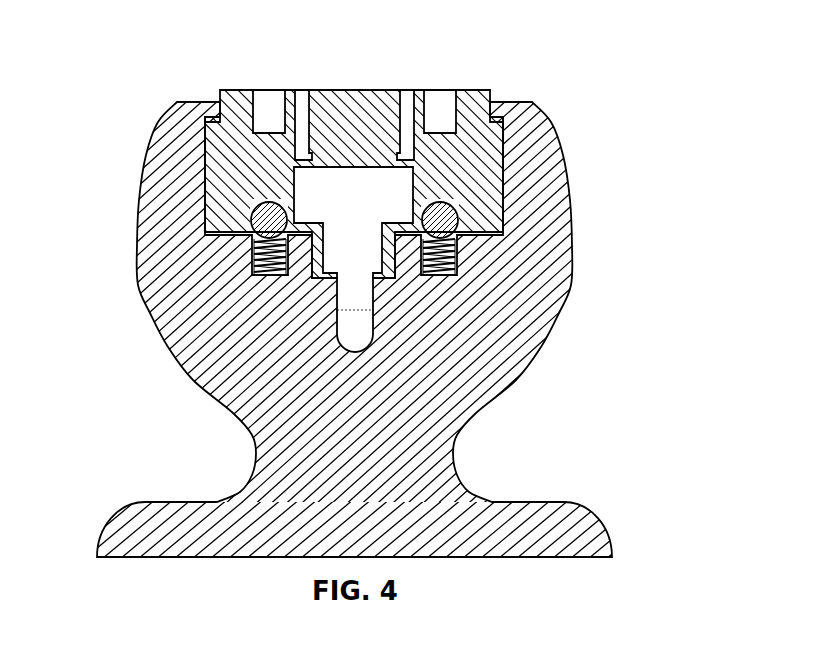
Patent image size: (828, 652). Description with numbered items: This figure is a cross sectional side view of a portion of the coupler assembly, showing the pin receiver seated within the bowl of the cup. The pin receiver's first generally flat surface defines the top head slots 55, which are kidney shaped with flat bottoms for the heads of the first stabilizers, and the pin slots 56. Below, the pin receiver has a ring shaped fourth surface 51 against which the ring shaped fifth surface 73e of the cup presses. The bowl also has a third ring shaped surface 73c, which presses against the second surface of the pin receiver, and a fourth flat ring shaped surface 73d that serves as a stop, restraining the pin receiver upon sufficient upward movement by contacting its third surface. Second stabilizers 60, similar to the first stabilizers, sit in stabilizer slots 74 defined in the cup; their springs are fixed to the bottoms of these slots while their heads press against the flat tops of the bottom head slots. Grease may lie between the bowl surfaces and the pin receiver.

The ring shaped fourth surface 51 is at (205, 170).
The top head slots 55 is at (263, 82).
The pin slots 56 is at (303, 82).
The second stabilizers 60 is at (251, 220).
The third ring shaped surface 73c is at (473, 90).
The fourth flat ring shaped surface 73d is at (508, 145).
The ring shaped fifth surface 73e is at (200, 152).
The stabilizer slots 74 is at (268, 280).